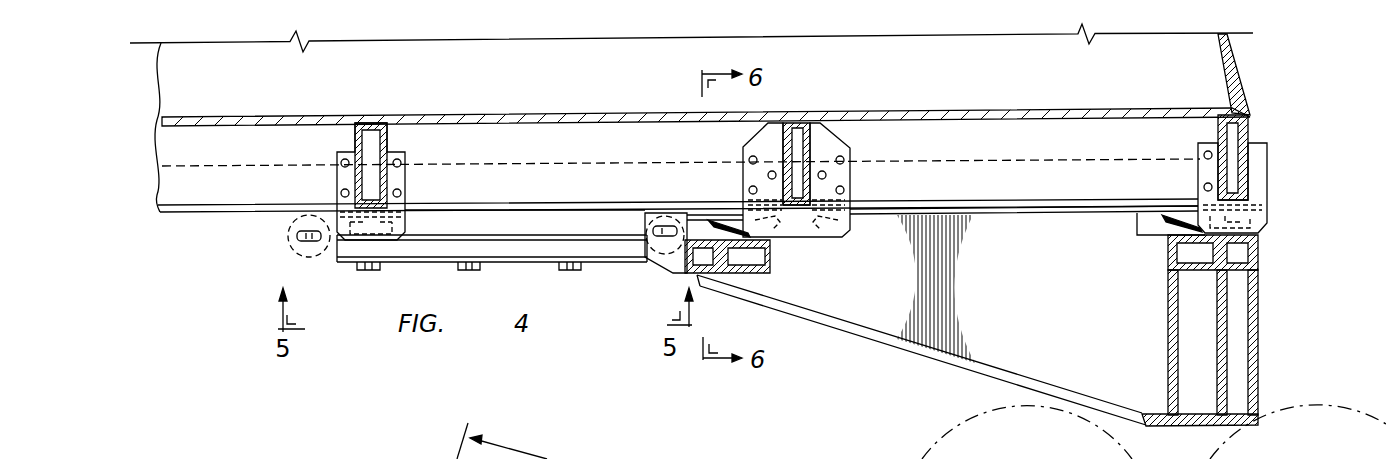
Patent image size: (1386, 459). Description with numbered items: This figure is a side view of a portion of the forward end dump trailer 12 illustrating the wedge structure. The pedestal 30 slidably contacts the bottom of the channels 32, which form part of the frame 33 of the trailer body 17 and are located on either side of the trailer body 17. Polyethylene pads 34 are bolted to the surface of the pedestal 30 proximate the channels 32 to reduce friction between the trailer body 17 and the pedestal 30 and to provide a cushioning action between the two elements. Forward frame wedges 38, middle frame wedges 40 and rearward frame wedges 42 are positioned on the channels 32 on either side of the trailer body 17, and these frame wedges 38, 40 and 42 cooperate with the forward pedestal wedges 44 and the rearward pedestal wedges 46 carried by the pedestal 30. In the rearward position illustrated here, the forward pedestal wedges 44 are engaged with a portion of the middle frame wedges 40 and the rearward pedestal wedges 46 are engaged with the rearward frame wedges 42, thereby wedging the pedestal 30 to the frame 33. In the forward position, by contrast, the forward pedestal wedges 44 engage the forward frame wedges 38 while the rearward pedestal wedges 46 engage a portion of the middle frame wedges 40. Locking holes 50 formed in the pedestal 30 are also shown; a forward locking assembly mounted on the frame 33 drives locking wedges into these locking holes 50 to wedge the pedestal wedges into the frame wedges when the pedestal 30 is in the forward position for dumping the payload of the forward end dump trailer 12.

The forward end dump trailer 12 is at (426, 441).
The trailer body 17 is at (578, 447).
The pedestal 30 is at (872, 344).
The channels 32 is at (430, 117).
The frame 33 is at (140, 193).
The polyethylene pads 34 is at (985, 208).
The forward frame wedges 38 is at (400, 221).
The middle frame wedges 40 is at (810, 238).
The rearward frame wedges 42 is at (1268, 214).
The forward pedestal wedges 44 is at (722, 218).
The rearward pedestal wedges 46 is at (1187, 214).
The locking holes 50 is at (290, 242).